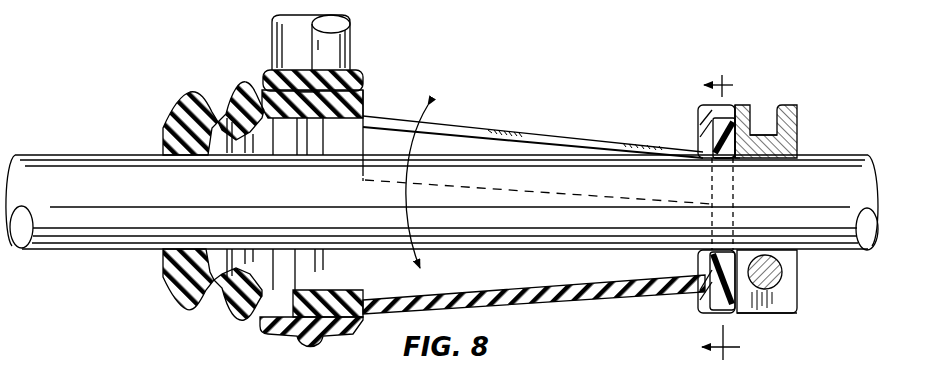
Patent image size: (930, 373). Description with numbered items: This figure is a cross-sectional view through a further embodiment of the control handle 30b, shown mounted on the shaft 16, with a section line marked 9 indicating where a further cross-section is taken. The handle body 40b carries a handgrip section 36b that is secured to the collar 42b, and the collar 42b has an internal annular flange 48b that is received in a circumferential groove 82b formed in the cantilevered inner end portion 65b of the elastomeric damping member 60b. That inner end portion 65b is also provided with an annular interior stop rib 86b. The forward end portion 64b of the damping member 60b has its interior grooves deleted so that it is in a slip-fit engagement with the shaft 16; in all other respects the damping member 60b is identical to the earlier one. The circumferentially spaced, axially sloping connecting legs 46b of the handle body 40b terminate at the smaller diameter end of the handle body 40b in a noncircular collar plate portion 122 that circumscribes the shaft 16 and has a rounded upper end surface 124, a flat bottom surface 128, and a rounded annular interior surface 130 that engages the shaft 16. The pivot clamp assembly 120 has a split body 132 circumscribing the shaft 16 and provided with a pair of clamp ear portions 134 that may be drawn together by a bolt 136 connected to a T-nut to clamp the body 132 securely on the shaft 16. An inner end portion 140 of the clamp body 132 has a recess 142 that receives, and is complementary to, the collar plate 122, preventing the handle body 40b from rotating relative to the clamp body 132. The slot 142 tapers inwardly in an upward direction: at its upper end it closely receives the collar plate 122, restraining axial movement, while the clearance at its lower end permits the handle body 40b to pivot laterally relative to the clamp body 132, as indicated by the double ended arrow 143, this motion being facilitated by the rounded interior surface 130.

The shaft 16 is at (68, 155).
The control handle 30b is at (512, 60).
The handgrip section 36b is at (360, 40).
The handle body 40b is at (523, 121).
The collar 42b is at (365, 78).
The connecting legs 46b is at (597, 133).
The internal annular flange 48b is at (296, 190).
The elastomeric damping member 60b is at (208, 67).
The forward end portion 64b is at (163, 127).
The cantilevered inner end portion 65b is at (365, 110).
The circumferential groove 82b is at (310, 90).
The annular interior stop rib 86b is at (310, 100).
The double ended arrow 143 is at (538, 189).
The pivot clamp assembly 120 is at (768, 318).
The collar plate portion 122 is at (733, 107).
The rounded upper end surface 124 is at (710, 108).
The flat bottom surface 128 is at (700, 316).
The rounded annular interior surface 130 is at (722, 158).
The split body 132 is at (768, 146).
The clamp ear portions 134 is at (800, 298).
The bolt 136 is at (783, 273).
The inner end portion 140 is at (753, 108).
The recess 142 is at (712, 135).
The section line 9 is at (723, 216).